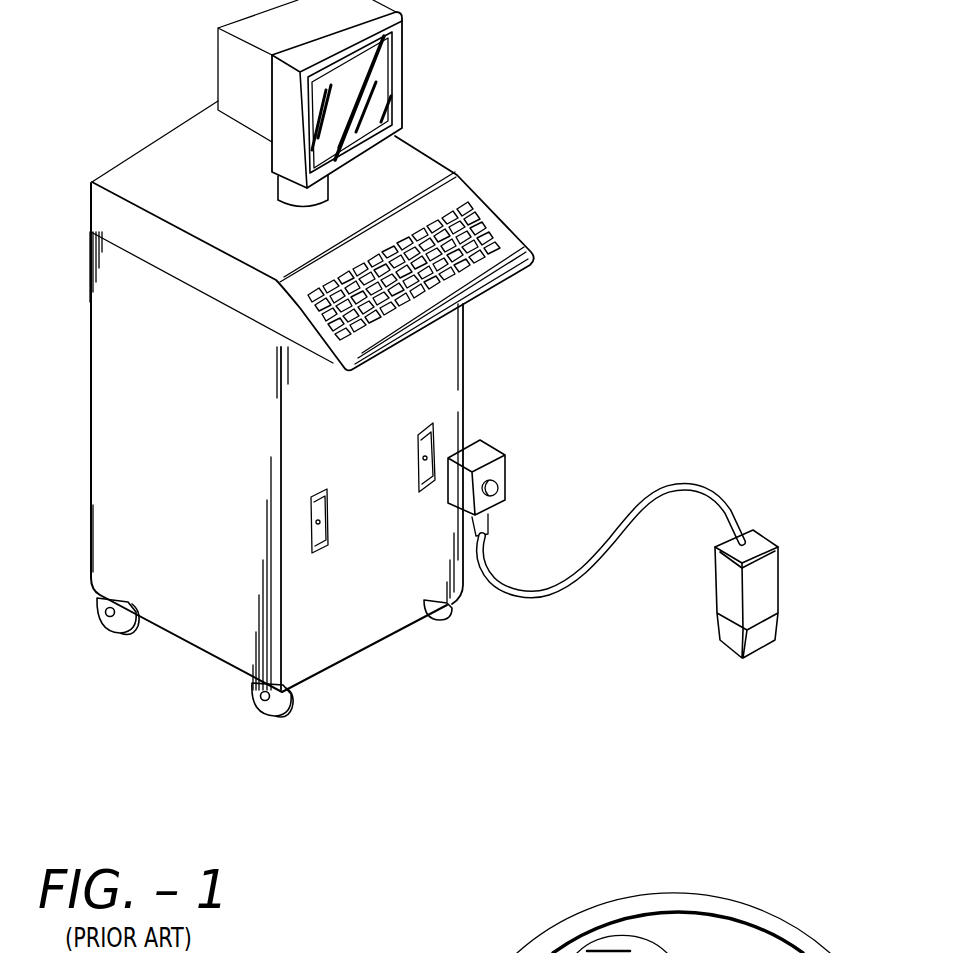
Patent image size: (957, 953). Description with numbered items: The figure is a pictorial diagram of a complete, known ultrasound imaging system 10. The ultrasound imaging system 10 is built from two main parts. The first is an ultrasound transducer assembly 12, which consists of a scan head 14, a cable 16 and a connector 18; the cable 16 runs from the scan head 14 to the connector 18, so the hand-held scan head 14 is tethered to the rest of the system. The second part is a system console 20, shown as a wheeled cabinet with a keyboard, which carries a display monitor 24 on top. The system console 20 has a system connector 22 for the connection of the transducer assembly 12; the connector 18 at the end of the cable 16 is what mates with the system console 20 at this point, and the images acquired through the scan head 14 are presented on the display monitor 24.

The ultrasound imaging system 10 is at (372, 752).
The ultrasound transducer assembly 12 is at (669, 602).
The scan head 14 is at (780, 593).
The cable 16 is at (668, 485).
The connector 18 is at (483, 453).
The system console 20 is at (223, 340).
The system connector 22 is at (432, 423).
The display monitor 24 is at (380, 82).